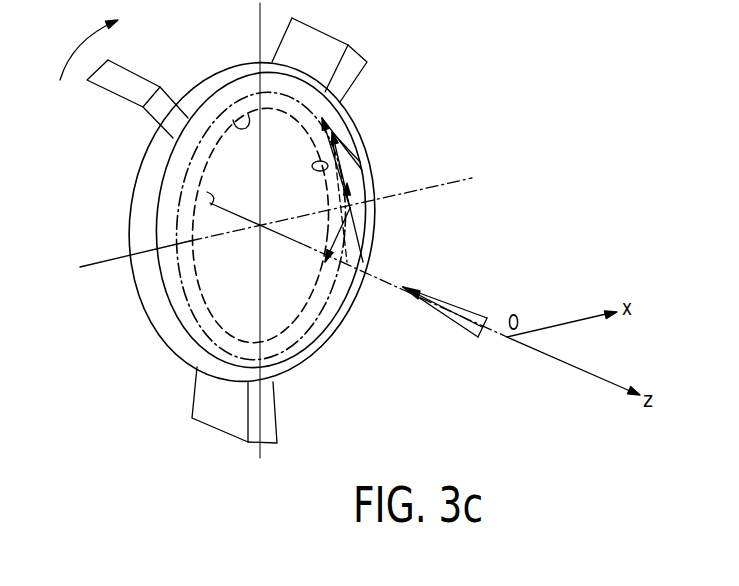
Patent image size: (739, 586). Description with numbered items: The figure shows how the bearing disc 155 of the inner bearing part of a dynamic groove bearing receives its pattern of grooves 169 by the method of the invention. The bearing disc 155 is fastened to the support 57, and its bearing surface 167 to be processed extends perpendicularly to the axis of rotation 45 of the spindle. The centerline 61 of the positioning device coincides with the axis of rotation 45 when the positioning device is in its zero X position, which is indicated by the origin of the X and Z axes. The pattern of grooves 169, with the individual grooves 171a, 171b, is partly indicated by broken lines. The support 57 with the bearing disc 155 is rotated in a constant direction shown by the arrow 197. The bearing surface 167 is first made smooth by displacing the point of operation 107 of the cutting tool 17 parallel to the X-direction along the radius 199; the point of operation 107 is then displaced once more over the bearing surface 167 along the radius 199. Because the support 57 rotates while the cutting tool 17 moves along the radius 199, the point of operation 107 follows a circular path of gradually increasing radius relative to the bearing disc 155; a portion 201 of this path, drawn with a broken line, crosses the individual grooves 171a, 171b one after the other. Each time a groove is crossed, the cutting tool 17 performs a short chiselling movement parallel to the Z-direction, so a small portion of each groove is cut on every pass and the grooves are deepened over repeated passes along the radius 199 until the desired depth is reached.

The cutting tool 17 is at (448, 322).
The axis of rotation 45 is at (207, 192).
The support 57 is at (122, 107).
The centerline 61 is at (580, 372).
The point of operation 107 is at (404, 288).
The bearing disc 155 is at (157, 313).
The bearing surface 167 is at (332, 325).
The pattern of grooves 169 is at (233, 120).
The individual groove 171a is at (345, 138).
The individual groove 171b is at (342, 172).
The arrow 197 is at (102, 40).
The radius 199 is at (197, 257).
The portion of circular path 201 is at (177, 217).